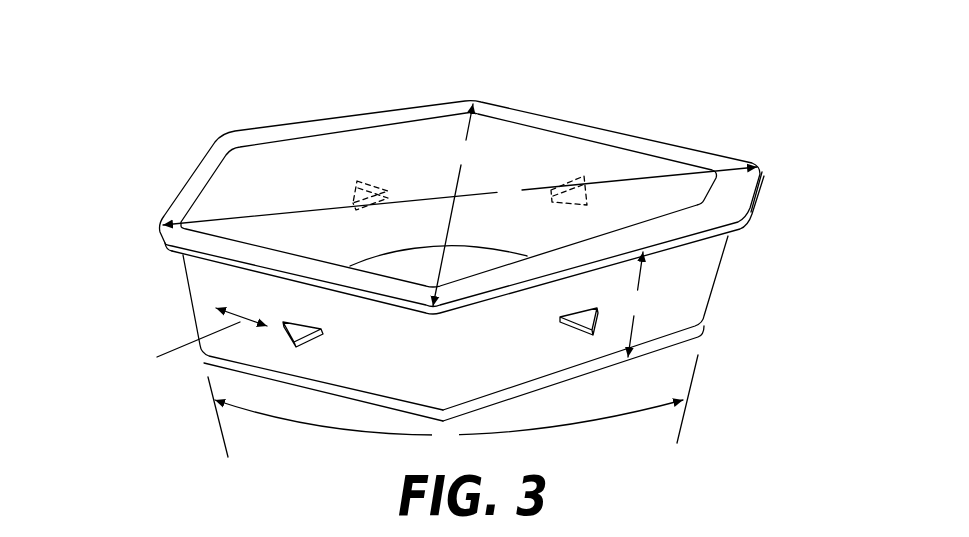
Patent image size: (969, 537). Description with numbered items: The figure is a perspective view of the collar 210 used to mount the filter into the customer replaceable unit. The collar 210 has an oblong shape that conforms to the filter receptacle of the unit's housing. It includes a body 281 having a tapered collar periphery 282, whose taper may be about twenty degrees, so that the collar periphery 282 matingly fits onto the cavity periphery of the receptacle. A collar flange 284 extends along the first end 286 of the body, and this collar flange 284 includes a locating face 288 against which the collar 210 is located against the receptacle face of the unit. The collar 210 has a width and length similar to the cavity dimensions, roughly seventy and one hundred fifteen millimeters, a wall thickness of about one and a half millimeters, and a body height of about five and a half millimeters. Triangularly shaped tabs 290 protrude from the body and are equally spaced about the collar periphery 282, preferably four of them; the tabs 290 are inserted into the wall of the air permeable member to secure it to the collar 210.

The collar 210 is at (450, 252).
The body 281 is at (714, 298).
The collar periphery 282 is at (432, 351).
The collar flange 284 is at (285, 122).
The first end 286 is at (170, 254).
The locating face 288 is at (756, 204).
The tabs 290 is at (372, 180).